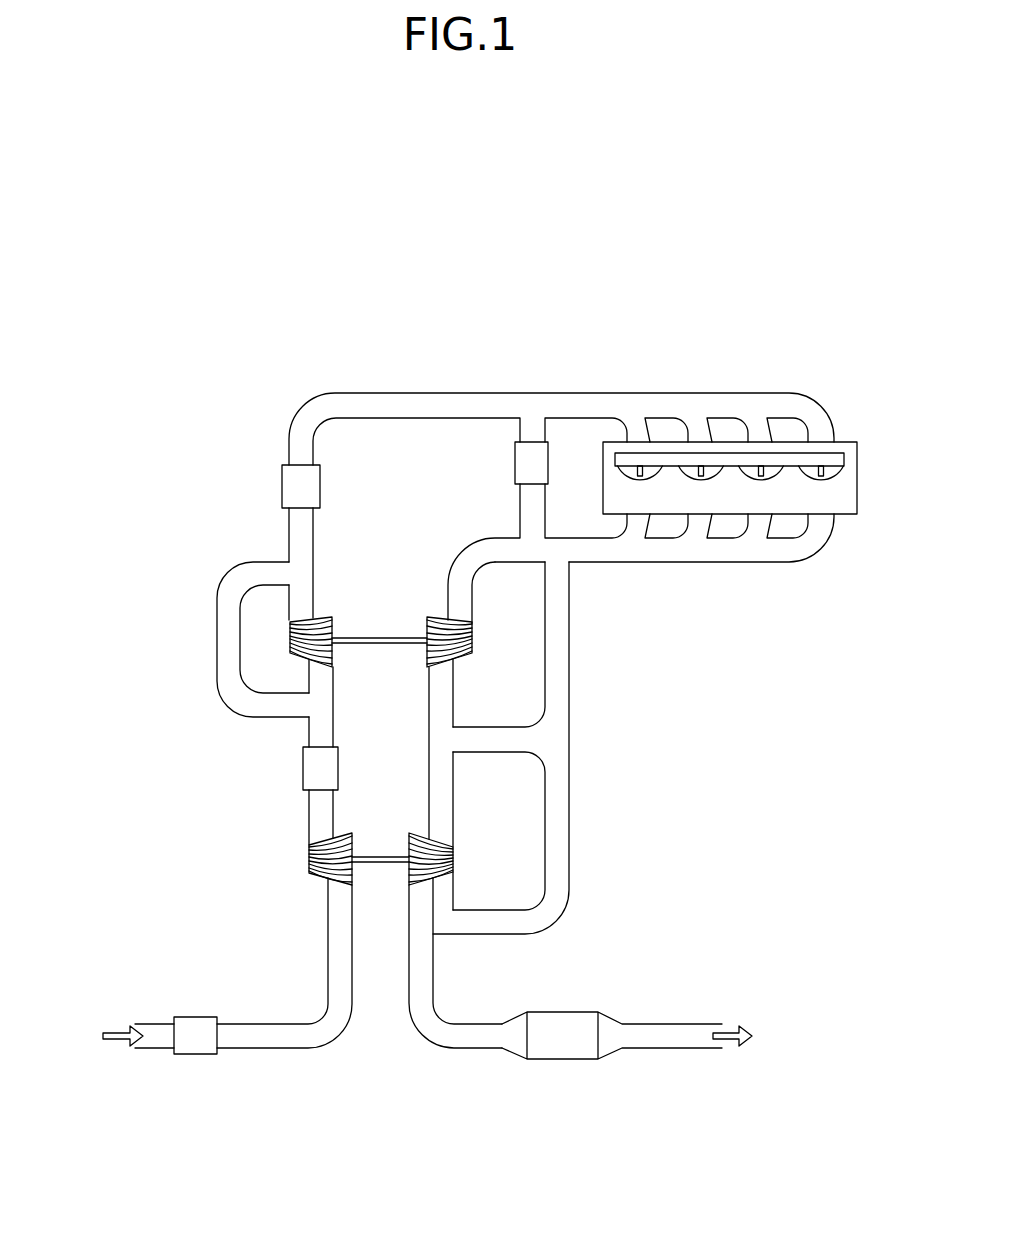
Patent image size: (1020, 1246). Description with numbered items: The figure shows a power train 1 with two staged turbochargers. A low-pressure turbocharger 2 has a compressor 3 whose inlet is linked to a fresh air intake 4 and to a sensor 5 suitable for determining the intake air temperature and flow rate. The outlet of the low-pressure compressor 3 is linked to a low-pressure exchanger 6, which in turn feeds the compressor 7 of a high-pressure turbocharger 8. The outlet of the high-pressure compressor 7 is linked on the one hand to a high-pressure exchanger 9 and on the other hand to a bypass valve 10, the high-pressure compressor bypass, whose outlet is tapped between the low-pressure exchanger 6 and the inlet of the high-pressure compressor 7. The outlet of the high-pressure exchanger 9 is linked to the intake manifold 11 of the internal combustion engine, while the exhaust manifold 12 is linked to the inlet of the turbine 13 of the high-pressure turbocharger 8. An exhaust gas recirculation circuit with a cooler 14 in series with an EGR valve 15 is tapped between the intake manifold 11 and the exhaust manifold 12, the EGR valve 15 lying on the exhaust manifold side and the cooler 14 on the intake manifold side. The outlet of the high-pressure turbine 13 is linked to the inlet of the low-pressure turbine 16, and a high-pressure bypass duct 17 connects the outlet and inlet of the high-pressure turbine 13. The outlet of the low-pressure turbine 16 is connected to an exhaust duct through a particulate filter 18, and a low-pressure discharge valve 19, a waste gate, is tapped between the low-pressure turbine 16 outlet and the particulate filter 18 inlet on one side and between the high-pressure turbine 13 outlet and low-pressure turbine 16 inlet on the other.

The power train 1 is at (362, 324).
The low-pressure turbocharger 2 is at (354, 845).
The compressor 3 is at (352, 832).
The fresh air intake 4 is at (118, 1064).
The sensor 5 is at (195, 1035).
The low-pressure exchanger 6 is at (320, 768).
The compressor 7 is at (333, 616).
The high-pressure turbocharger 8 is at (381, 606).
The high-pressure exchanger 9 is at (301, 486).
The bypass valve 10 is at (228, 643).
The intake manifold 11 is at (742, 392).
The exhaust manifold 12 is at (742, 562).
The turbine 13 is at (426, 616).
The cooler 14 is at (531, 463).
The EGR valve 15 is at (521, 532).
The low-pressure turbine 16 is at (409, 832).
The high-pressure bypass duct 17 is at (555, 627).
The particulate filter 18 is at (563, 1061).
The low-pressure discharge valve 19 is at (555, 823).